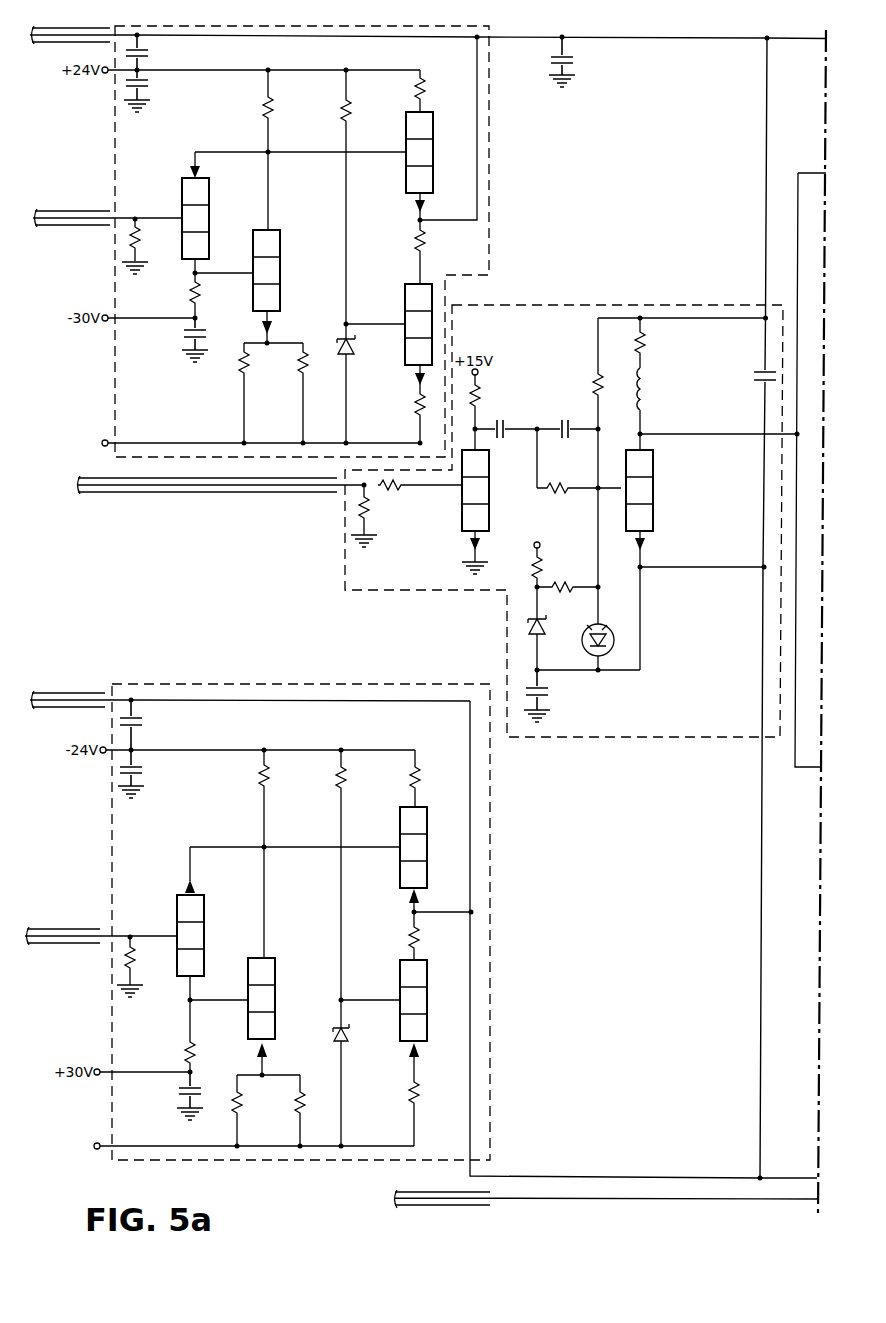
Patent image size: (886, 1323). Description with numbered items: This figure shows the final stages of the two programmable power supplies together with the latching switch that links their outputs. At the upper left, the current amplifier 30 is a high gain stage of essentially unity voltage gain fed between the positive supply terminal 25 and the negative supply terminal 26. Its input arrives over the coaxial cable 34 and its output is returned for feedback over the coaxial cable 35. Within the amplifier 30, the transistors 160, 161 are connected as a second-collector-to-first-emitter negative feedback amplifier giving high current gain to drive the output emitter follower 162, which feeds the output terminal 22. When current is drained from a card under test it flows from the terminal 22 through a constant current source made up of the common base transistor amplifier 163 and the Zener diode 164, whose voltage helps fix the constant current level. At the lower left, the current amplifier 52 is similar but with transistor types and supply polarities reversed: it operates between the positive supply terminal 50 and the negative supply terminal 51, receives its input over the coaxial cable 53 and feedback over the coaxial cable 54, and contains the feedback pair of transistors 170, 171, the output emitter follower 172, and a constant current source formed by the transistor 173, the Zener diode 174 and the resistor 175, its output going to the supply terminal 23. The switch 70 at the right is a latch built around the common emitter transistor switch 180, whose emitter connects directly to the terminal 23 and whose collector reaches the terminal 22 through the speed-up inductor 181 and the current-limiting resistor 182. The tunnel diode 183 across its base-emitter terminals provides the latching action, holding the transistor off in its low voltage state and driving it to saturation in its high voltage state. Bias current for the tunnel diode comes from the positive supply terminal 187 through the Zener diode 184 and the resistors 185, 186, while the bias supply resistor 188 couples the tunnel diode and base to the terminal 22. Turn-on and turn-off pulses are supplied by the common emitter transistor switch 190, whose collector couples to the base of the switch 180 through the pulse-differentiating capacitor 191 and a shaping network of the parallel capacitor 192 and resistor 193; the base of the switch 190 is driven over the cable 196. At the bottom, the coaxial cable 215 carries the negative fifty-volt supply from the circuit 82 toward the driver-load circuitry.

The coaxial cable 35 is at (63, 44).
The positive supply terminal 25 is at (117, 73).
The output terminal 22 is at (476, 39).
The current amplifier 30 is at (489, 113).
The coaxial cable 34 is at (81, 215).
The transistor 160 is at (209, 212).
The transistor 161 is at (280, 272).
The output emitter follower 162 is at (433, 178).
The common base transistor amplifier 163 is at (405, 301).
The Zener diode 164 is at (351, 351).
The negative supply terminal 26 is at (102, 439).
The switch 70 is at (693, 304).
The current-limiting resistor 182 is at (645, 345).
The bias supply resistor 188 is at (597, 382).
The speed-up inductor 181 is at (642, 401).
The pulse-differentiating capacitor 191 is at (500, 425).
The capacitor 192 is at (559, 425).
The common emitter transistor switch 190 is at (489, 489).
The resistor 193 is at (563, 491).
The common emitter transistor switch 180 is at (653, 490).
The cable 196 is at (149, 493).
The positive supply terminal 187 is at (541, 546).
The resistor 185 is at (532, 563).
The resistor 186 is at (574, 584).
The Zener diode 184 is at (545, 627).
The tunnel diode 183 is at (584, 653).
The coaxial cable 54 is at (76, 693).
The current amplifier 52 is at (252, 685).
The negative supply terminal 51 is at (103, 757).
The coaxial cable 53 is at (43, 927).
The transistor 170 is at (205, 918).
The transistor 171 is at (276, 986).
The output emitter follower 172 is at (400, 828).
The transistor 173 is at (398, 984).
The Zener diode 174 is at (348, 1035).
The resistor 175 is at (407, 1092).
The supply terminal 23 is at (471, 912).
The positive supply terminal 50 is at (97, 1143).
The circuit 82 is at (379, 1198).
The coaxial cable 215 is at (481, 1206).